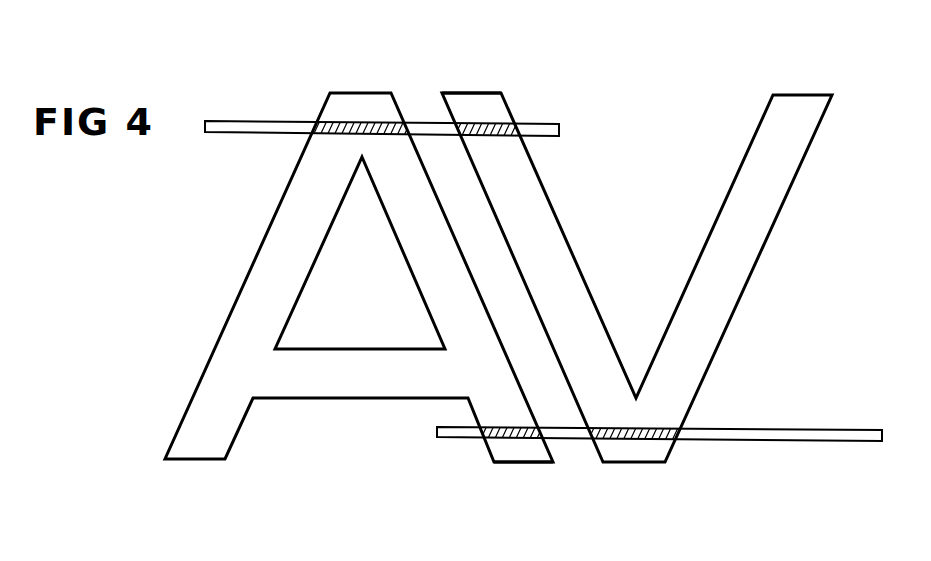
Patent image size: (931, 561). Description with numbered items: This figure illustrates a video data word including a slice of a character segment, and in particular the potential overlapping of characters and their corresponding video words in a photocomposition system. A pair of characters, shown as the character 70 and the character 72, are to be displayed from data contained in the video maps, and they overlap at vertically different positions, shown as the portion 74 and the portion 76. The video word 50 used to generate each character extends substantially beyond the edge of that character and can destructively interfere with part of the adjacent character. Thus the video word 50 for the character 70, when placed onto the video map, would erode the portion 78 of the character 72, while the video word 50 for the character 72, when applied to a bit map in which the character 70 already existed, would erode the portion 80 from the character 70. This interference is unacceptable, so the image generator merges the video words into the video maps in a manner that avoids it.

The video word 50 is at (265, 125).
The character 70 is at (373, 311).
The character 72 is at (646, 247).
The portion 74 is at (535, 465).
The portion 76 is at (442, 92).
The portion 78 is at (472, 123).
The portion 80 is at (503, 435).